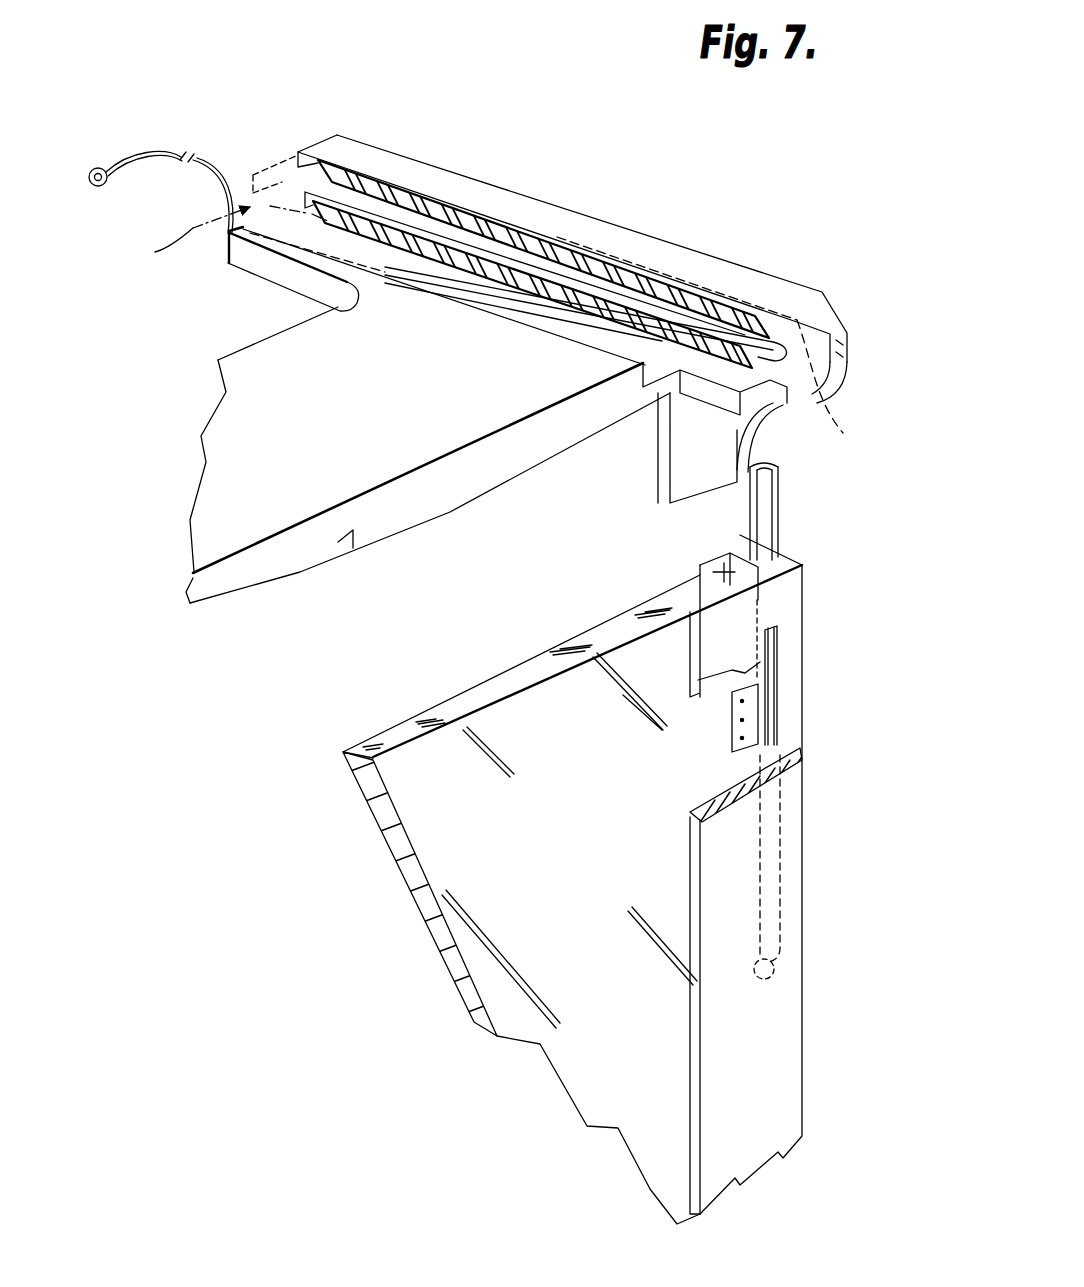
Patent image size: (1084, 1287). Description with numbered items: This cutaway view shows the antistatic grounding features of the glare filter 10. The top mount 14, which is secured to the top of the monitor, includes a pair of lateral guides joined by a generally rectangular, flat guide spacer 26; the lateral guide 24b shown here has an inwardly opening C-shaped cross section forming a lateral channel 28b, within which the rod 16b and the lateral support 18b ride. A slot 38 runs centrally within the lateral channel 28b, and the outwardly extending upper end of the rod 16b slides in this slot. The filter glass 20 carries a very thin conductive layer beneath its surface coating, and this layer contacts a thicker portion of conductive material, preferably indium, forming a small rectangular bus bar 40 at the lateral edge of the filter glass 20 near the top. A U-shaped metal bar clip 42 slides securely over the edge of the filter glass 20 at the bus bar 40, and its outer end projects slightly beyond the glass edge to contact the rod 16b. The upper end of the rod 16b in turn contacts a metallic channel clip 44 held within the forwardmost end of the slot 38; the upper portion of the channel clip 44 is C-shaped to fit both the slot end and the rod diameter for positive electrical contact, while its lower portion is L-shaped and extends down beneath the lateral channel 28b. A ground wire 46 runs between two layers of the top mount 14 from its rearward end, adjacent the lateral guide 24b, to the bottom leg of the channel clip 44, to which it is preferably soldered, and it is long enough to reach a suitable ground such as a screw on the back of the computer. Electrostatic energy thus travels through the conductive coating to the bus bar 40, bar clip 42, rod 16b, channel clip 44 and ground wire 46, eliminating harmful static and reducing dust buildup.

The glare filter 10 is at (282, 898).
The top mount 14 is at (552, 462).
The rod 16b is at (773, 513).
The lateral support 18b is at (787, 1011).
The filter glass 20 is at (582, 822).
The lateral guide 24b is at (677, 260).
The guide spacer 26 is at (258, 415).
The lateral channel 28b is at (215, 235).
The slot 38 is at (527, 260).
The bus bar 40 is at (760, 673).
The bar clip 42 is at (753, 715).
The channel clip 44 is at (835, 428).
The ground wire 46 is at (160, 157).